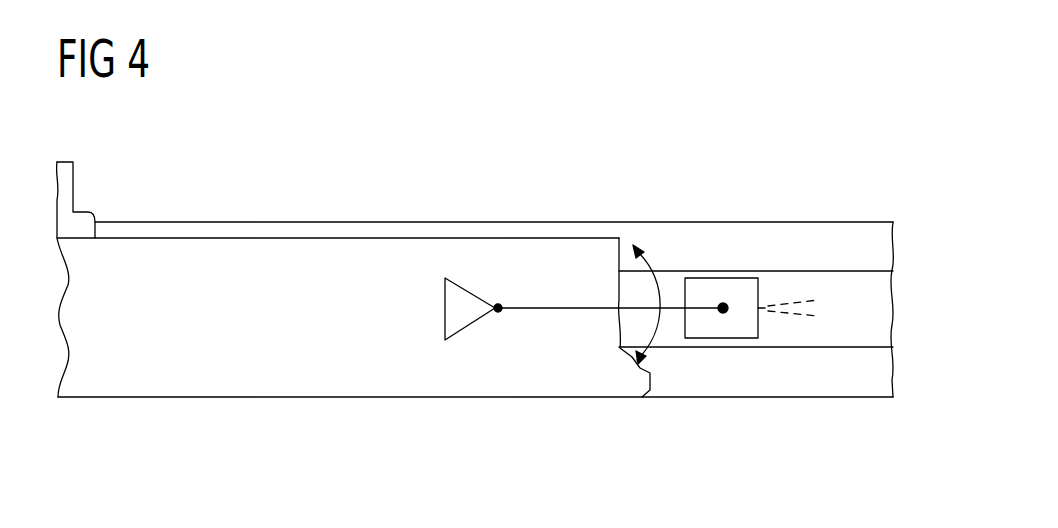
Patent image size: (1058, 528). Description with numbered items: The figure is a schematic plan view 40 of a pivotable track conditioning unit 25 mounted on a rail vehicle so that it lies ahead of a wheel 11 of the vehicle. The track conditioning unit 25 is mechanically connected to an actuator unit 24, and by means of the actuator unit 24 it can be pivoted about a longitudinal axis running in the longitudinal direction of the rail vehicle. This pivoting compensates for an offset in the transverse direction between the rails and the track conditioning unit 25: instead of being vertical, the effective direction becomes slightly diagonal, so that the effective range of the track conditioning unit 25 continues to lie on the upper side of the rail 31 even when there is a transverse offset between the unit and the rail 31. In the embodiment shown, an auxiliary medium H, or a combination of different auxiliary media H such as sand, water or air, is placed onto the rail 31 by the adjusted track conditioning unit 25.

The plan view 40 is at (752, 123).
The wheel 11 is at (300, 388).
The rail 31 is at (878, 310).
The track conditioning unit 25 is at (722, 287).
The actuator unit 24 is at (472, 327).
The auxiliary medium H is at (800, 318).